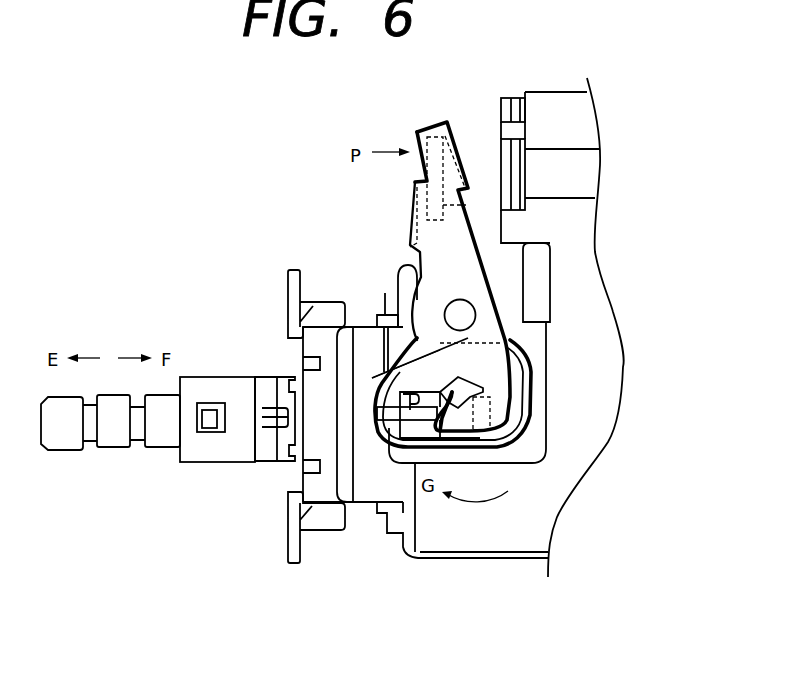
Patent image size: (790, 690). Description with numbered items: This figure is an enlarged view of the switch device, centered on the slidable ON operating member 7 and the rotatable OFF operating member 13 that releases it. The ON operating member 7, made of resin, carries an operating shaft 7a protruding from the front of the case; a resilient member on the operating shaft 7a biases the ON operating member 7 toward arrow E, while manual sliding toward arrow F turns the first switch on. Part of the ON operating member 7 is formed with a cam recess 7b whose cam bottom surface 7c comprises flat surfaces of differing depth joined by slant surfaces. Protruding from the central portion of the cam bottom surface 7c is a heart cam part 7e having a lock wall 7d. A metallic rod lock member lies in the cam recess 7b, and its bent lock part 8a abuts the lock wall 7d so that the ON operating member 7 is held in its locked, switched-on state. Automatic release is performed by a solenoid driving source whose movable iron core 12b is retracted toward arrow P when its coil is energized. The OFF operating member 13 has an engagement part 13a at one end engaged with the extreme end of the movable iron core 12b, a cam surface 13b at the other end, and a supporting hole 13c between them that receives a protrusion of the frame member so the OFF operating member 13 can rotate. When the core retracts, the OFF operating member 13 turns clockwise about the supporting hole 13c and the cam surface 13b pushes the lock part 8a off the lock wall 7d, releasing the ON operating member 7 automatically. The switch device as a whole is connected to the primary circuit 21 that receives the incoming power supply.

The ON operating member 7 is at (232, 370).
The operating shaft 7a is at (118, 430).
The cam recess 7b is at (394, 390).
The cam bottom surface 7c is at (421, 408).
The lock wall 7d is at (440, 390).
The heart cam part 7e is at (448, 393).
The lock part 8a is at (391, 428).
The movable iron core 12b is at (482, 167).
The OFF operating member 13 is at (468, 255).
The engagement part 13a is at (457, 132).
The cam surface 13b is at (462, 420).
The supporting hole 13c is at (464, 313).
The primary power supply supplying circuit 21 is at (558, 125).